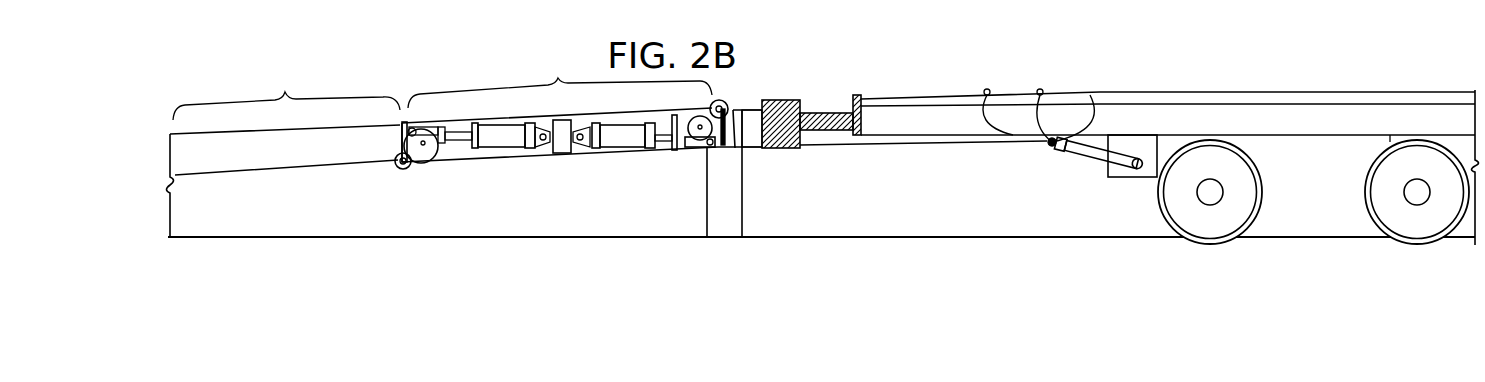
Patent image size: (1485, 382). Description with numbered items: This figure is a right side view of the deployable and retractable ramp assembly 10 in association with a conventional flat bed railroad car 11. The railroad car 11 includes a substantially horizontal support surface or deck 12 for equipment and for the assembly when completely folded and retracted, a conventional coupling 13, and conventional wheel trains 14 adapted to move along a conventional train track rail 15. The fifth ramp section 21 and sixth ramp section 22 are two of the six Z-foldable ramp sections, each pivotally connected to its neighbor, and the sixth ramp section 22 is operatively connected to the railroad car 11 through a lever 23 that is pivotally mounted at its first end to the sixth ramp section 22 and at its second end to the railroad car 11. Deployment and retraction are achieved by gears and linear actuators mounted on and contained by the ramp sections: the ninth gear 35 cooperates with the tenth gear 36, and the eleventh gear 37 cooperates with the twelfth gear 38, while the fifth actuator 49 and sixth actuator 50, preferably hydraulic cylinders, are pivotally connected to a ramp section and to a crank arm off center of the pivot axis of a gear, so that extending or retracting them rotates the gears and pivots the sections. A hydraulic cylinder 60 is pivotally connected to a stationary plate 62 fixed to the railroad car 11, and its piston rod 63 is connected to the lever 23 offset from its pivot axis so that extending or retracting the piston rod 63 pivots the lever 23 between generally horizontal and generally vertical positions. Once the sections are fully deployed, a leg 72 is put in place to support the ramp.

The ramp assembly 10 is at (750, 82).
The railroad car 11 is at (1240, 105).
The support surface 12 is at (1363, 98).
The coupling 13 is at (790, 137).
The wheel trains 14 is at (1257, 220).
The train track rail 15 is at (917, 237).
The fifth ramp section 21 is at (285, 121).
The sixth ramp section 22 is at (582, 107).
The lever 23 is at (750, 137).
The ninth gear 35 is at (397, 167).
The tenth gear 36 is at (434, 160).
The eleventh gear 37 is at (692, 152).
The twelfth gear 38 is at (711, 159).
The fifth actuator 49 is at (502, 152).
The sixth actuator 50 is at (612, 150).
The hydraulic cylinder 60 is at (1083, 158).
The plate 62 is at (1112, 178).
The piston rod 63 is at (1030, 145).
The leg 72 is at (718, 222).